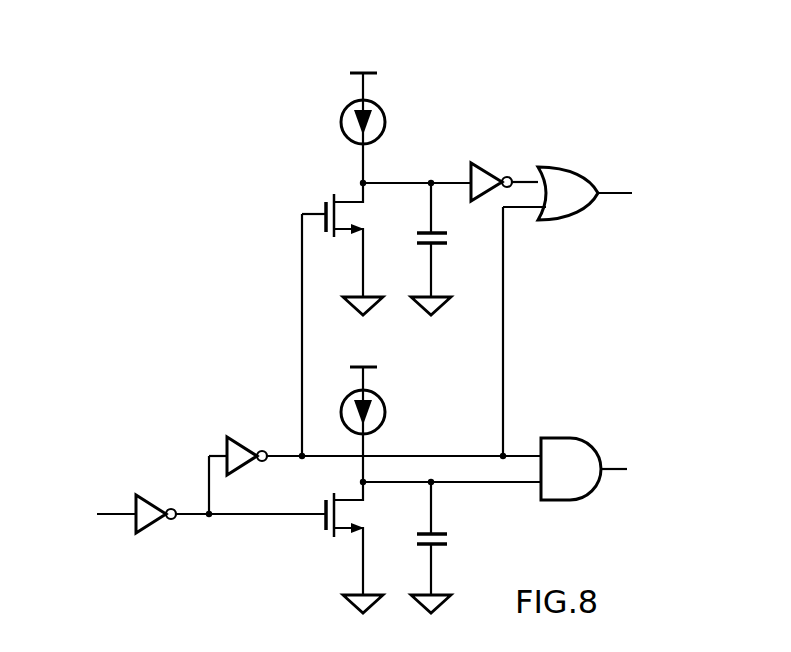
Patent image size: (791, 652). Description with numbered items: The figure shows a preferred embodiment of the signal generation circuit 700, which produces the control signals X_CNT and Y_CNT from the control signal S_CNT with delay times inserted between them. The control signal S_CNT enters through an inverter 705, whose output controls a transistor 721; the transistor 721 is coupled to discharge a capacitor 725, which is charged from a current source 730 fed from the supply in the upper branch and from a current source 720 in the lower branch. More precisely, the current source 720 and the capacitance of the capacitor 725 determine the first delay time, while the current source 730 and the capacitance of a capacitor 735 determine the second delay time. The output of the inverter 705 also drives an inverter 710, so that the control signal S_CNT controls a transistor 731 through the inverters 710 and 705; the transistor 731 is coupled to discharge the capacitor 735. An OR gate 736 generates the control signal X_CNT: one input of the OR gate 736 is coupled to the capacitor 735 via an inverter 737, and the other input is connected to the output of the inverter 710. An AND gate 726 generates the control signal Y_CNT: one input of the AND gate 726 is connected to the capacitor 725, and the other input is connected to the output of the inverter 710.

The signal generation circuit 700 is at (720, 63).
The inverter 705 is at (158, 500).
The inverter 710 is at (249, 442).
The current source 720 is at (386, 409).
The transistor 721 is at (346, 536).
The capacitor 725 is at (412, 538).
The AND gate 726 is at (553, 436).
The current source 730 is at (336, 118).
The transistor 731 is at (346, 236).
The capacitor 735 is at (412, 238).
The OR gate 736 is at (558, 165).
The inverter 737 is at (494, 165).